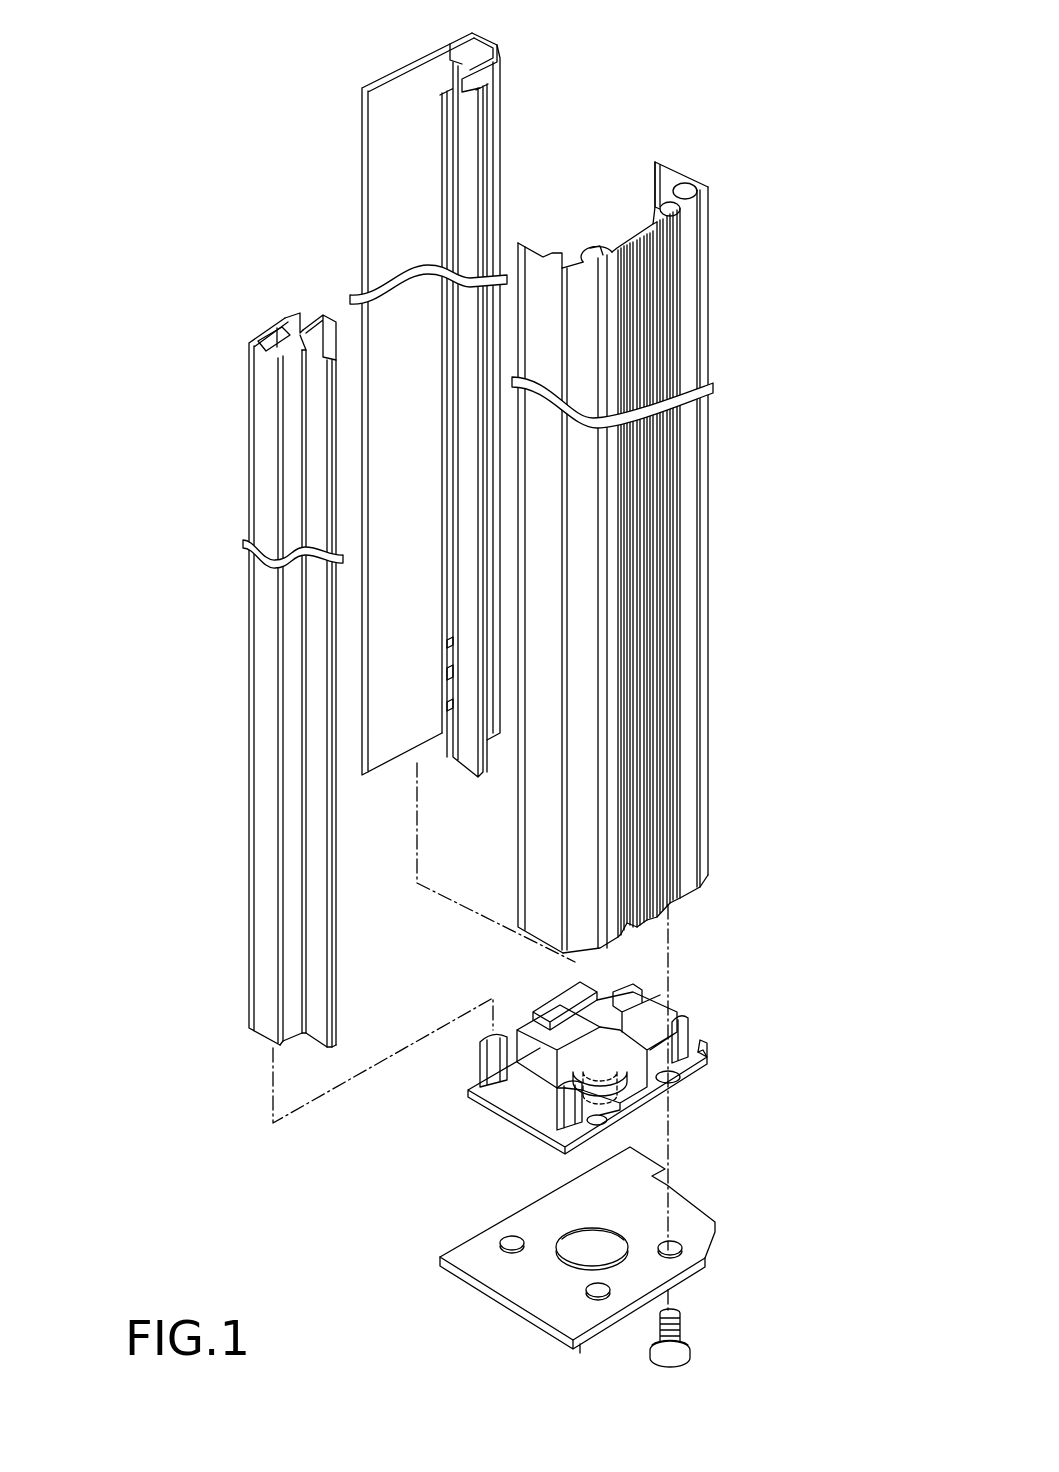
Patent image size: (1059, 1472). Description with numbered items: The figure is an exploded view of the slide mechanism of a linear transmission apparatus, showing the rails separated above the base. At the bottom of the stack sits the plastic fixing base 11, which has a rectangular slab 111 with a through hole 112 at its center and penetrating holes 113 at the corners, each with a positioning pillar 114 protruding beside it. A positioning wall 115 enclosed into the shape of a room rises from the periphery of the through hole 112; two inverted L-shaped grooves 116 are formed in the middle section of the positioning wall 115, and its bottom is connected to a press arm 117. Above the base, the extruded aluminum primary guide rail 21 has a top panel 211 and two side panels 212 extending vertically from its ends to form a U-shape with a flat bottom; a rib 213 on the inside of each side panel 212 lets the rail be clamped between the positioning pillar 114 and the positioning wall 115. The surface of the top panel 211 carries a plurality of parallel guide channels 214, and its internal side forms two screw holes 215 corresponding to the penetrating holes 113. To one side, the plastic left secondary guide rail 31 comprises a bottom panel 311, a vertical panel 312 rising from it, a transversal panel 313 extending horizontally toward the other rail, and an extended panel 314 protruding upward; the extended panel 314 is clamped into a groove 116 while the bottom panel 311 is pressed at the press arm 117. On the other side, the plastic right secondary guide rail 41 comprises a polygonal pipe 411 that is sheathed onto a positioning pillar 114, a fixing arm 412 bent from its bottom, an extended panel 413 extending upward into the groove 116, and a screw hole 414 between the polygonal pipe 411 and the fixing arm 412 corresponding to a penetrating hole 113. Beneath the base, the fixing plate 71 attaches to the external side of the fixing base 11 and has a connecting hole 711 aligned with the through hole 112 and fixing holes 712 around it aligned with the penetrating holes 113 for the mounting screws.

The fixing base 11 is at (595, 1059).
The slab 111 is at (523, 1122).
The through hole 112 is at (615, 1000).
The penetrating hole 113 is at (692, 1053).
The positioning pillar 114 is at (687, 1037).
The positioning wall 115 is at (543, 1073).
The inverted L-shaped groove 116 is at (557, 1040).
The press arm 117 is at (563, 993).
The primary guide rail 21 is at (656, 692).
The top panel 211 is at (690, 523).
The side panel 212 is at (668, 166).
The rib 213 is at (677, 178).
The guide channel 214 is at (643, 278).
The screw hole 215 is at (600, 252).
The left secondary guide rail 31 is at (426, 483).
The bottom panel 311 is at (400, 62).
The vertical panel 312 is at (490, 33).
The transversal panel 313 is at (493, 97).
The extended panel 314 is at (483, 135).
The right secondary guide rail 41 is at (310, 668).
The polygonal pipe 411 is at (252, 392).
The fixing arm 412 is at (302, 317).
The extended panel 413 is at (317, 418).
The screw hole 414 is at (287, 325).
The fixing plate 71 is at (554, 1250).
The connecting hole 711 is at (587, 1242).
The fixing hole 712 is at (675, 1245).